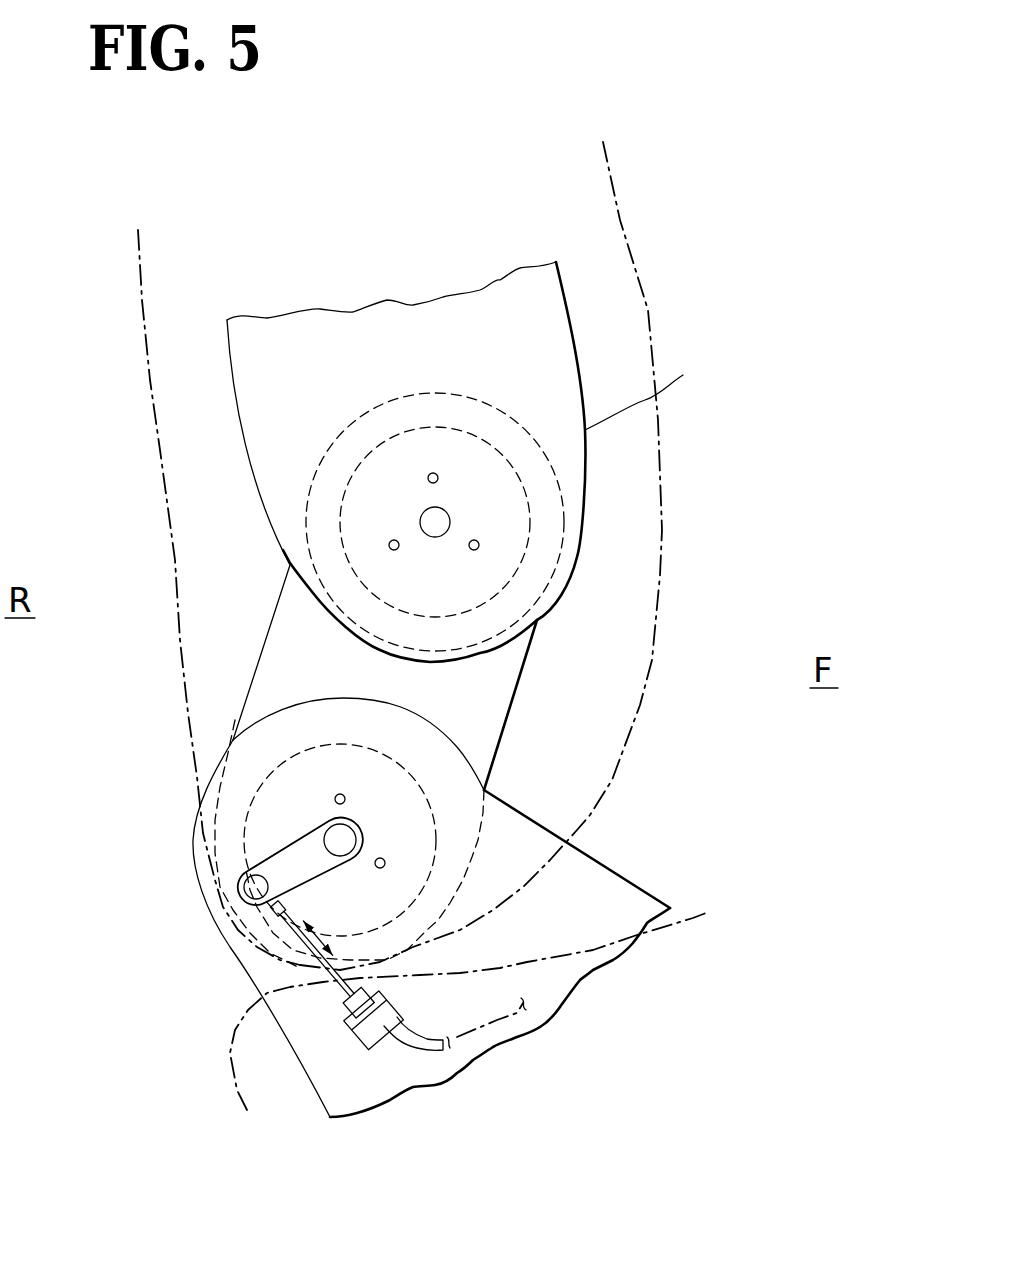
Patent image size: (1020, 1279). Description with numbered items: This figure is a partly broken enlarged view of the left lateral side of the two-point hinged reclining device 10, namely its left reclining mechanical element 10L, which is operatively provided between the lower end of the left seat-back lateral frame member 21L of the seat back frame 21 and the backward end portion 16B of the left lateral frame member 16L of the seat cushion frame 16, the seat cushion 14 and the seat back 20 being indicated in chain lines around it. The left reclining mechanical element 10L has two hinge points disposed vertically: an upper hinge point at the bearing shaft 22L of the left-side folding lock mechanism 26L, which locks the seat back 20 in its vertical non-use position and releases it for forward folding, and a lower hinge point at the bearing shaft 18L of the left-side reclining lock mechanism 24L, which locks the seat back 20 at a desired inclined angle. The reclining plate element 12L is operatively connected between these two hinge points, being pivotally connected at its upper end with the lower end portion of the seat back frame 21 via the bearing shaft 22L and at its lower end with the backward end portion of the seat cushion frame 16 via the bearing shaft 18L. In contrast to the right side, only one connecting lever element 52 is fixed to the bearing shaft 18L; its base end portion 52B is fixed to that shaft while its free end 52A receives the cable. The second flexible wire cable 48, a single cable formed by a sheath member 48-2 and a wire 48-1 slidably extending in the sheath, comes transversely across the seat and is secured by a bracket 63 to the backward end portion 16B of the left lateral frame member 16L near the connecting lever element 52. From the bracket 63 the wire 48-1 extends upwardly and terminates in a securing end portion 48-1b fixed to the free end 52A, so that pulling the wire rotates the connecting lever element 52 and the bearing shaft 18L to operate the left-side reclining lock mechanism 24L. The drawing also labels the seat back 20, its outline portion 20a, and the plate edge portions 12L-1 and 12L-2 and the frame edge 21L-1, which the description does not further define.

The reclining device 10 is at (734, 196).
The left reclining mechanical element 10L is at (699, 445).
The reclining plate element 12L is at (441, 815).
The upper portion of left frame 12L-1 is at (562, 513).
The lower portion of left frame 12L-2 is at (465, 880).
The seat cushion 14 is at (232, 1078).
The seat cushion frame 16 is at (609, 842).
The backward end portion 16B is at (273, 712).
The left lateral frame member 16L is at (523, 805).
The bearing shaft 18L is at (323, 830).
The seat back 20 is at (658, 607).
The side portion of reclining mechanism 20a is at (148, 368).
The seat back frame 21 is at (506, 429).
The left seat-back lateral frame member 21L is at (568, 295).
The edge of left link plate 21L-1 is at (685, 386).
The bearing shaft 22L is at (425, 520).
The left-side reclining lock mechanism 24L is at (394, 756).
The left-side folding lock mechanism 26L is at (465, 392).
The second flexible wire cable 48 is at (300, 1050).
The wire 48-1 is at (214, 948).
The securing end portion 48-1b is at (237, 900).
The sheath member 48-2 is at (405, 1052).
The connecting lever element 52 is at (235, 779).
The free end 52A is at (286, 839).
The base end portion 52B is at (360, 822).
The bracket 63 is at (357, 1040).